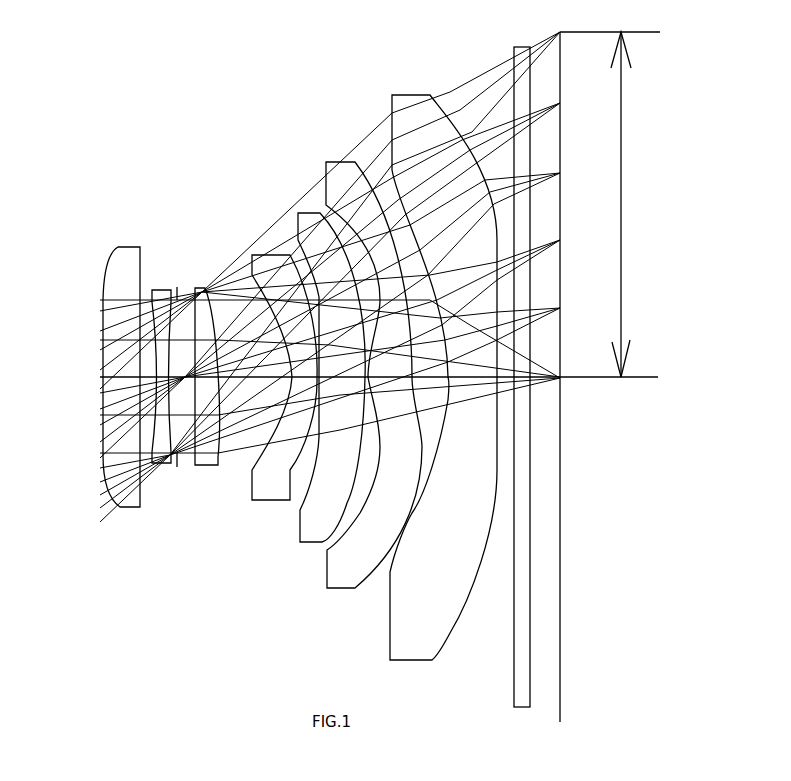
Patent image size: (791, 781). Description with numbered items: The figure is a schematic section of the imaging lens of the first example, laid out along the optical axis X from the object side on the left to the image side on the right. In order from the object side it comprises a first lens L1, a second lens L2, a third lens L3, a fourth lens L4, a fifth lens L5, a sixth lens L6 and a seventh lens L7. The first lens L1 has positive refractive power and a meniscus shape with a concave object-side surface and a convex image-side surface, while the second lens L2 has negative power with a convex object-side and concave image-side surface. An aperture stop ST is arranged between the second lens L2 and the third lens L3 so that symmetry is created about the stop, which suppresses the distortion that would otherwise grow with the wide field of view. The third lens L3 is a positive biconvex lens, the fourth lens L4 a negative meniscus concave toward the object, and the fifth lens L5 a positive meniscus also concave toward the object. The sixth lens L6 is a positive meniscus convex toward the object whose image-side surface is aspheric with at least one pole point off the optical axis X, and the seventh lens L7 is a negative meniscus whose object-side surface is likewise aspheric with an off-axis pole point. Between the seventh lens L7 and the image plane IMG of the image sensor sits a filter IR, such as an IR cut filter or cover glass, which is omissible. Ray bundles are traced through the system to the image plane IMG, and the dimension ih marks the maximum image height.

The first lens L1 is at (130, 247).
The second lens L2 is at (163, 290).
The third lens L3 is at (205, 288).
The fourth lens L4 is at (258, 255).
The fifth lens L5 is at (312, 213).
The sixth lens L6 is at (346, 162).
The seventh lens L7 is at (413, 95).
The aperture stop ST is at (181, 466).
The filter IR is at (520, 47).
The image plane IMG is at (559, 702).
The optical axis X is at (108, 352).
The maximum image height ih is at (610, 204).